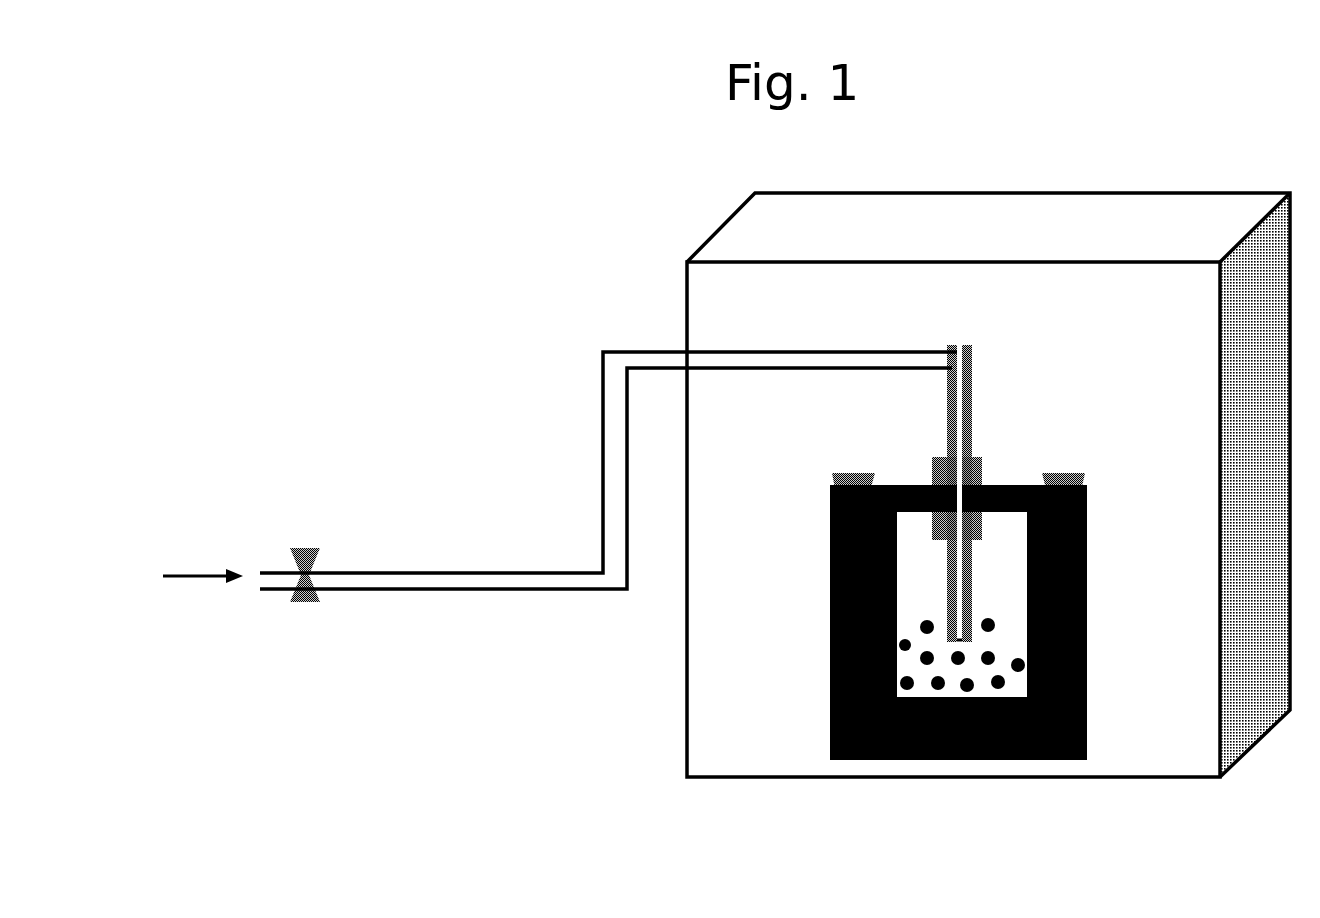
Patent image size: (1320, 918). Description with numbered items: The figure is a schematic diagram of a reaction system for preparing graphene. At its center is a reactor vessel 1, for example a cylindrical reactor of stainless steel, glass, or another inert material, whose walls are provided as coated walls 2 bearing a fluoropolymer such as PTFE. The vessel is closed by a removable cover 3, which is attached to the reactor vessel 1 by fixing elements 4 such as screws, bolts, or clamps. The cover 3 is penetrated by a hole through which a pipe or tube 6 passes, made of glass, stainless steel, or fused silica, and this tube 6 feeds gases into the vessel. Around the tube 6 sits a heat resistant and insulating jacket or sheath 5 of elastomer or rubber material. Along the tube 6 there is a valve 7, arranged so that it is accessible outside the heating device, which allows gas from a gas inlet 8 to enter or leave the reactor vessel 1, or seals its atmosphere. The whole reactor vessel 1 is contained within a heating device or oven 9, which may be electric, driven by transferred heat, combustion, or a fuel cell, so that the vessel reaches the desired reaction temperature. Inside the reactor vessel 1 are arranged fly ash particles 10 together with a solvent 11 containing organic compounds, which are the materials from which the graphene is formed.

The reactor vessel 1 is at (1090, 655).
The coated wall 2 is at (830, 633).
The removable cover 3 is at (1008, 483).
The fixing elements 4 is at (835, 478).
The insulating heat resistant sheath 5 is at (932, 465).
The tube 6 is at (557, 575).
The valve 7 is at (295, 543).
The gas inlet 8 is at (175, 575).
The heating device 9 is at (1004, 247).
The fly ash particles 10 is at (1055, 693).
The solvent 11 is at (957, 791).